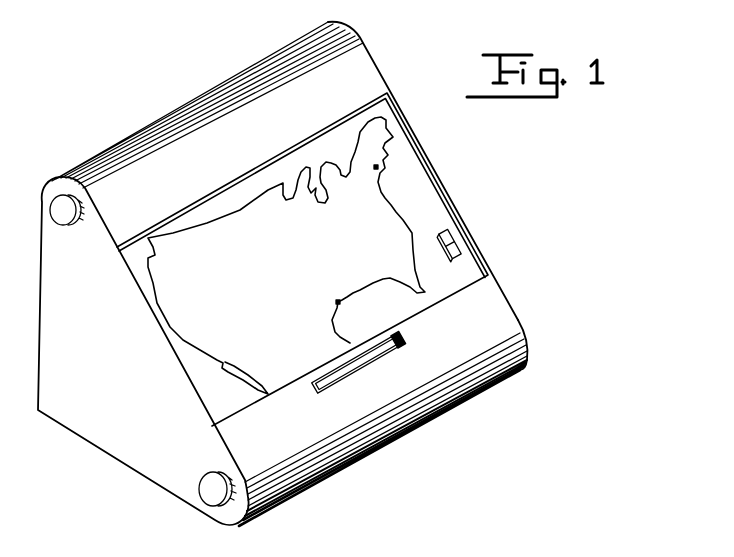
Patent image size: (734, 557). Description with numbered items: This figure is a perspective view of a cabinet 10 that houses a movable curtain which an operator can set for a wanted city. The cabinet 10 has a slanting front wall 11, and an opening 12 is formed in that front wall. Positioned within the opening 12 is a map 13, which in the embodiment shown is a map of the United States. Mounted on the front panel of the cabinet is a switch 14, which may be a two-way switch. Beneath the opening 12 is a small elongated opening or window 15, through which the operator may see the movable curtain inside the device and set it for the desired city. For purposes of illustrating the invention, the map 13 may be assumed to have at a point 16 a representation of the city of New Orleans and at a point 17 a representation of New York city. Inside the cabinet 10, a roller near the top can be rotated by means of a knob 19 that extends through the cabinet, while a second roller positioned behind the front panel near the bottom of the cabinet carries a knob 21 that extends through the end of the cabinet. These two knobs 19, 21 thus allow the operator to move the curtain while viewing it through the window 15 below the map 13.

The cabinet 10 is at (85, 425).
The slanting front wall 11 is at (118, 223).
The opening 12 is at (237, 410).
The map 13 is at (417, 170).
The switch 14 is at (453, 242).
The window 15 is at (403, 333).
The point 16 is at (337, 299).
The point 17 is at (373, 169).
The knob 19 is at (68, 222).
The knob 21 is at (215, 493).